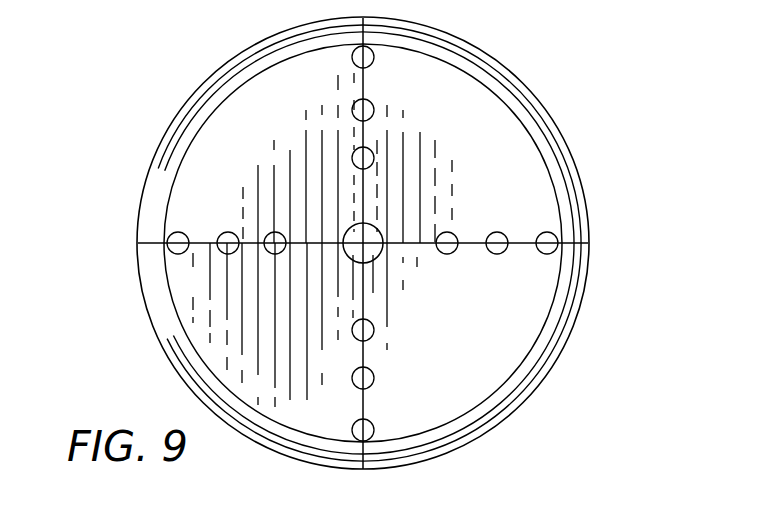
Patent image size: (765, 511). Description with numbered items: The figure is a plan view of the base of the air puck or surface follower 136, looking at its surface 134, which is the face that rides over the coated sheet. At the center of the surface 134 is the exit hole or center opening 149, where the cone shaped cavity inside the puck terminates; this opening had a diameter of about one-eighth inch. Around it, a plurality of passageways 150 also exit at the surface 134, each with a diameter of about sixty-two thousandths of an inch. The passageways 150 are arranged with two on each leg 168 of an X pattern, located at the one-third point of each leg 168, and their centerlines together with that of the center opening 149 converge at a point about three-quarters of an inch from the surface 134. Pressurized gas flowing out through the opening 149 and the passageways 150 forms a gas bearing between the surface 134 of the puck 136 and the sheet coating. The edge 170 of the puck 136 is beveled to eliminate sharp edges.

The surface of the puck 134 is at (503, 143).
The air puck or surface follower 136 is at (522, 83).
The exit hole or center opening 149 is at (375, 258).
The passageways 150 is at (352, 58).
The leg of the X pattern 168 is at (378, 130).
The edge of the air puck 170 is at (176, 118).